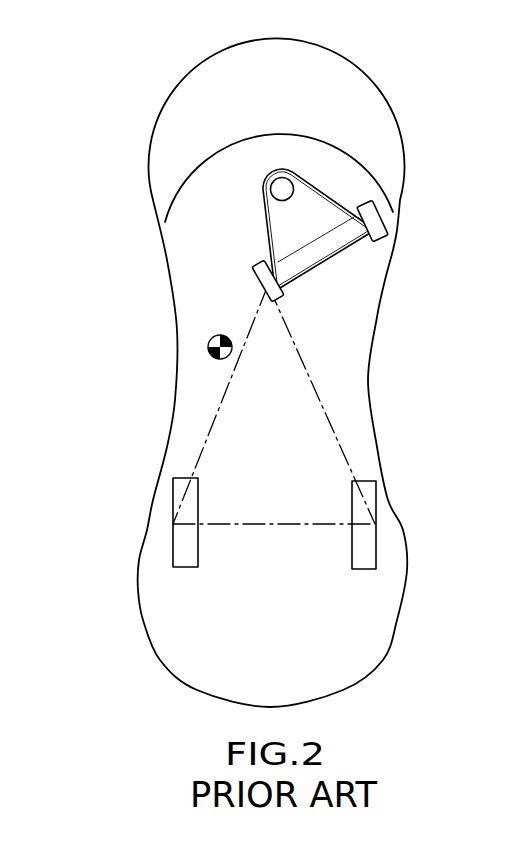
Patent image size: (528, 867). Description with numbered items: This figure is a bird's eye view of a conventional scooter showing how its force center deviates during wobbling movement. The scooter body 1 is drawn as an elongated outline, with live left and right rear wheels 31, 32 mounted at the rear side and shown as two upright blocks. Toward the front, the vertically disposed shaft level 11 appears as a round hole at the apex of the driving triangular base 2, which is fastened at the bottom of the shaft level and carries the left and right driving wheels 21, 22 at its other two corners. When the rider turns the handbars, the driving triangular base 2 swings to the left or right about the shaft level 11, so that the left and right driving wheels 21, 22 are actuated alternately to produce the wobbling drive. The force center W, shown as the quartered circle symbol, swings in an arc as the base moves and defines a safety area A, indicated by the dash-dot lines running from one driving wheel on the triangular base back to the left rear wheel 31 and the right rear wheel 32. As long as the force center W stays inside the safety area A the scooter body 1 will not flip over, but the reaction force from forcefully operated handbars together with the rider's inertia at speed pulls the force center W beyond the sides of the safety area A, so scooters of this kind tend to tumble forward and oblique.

The scooter body 1 is at (372, 392).
The driving triangular base 2 is at (306, 208).
The shaft level 11 is at (277, 180).
The left driving wheel 21 is at (258, 272).
The right driving wheel 22 is at (378, 222).
The left rear wheel 31 is at (183, 543).
The right rear wheel 32 is at (362, 547).
The force center W is at (211, 356).
The safety area A is at (292, 332).